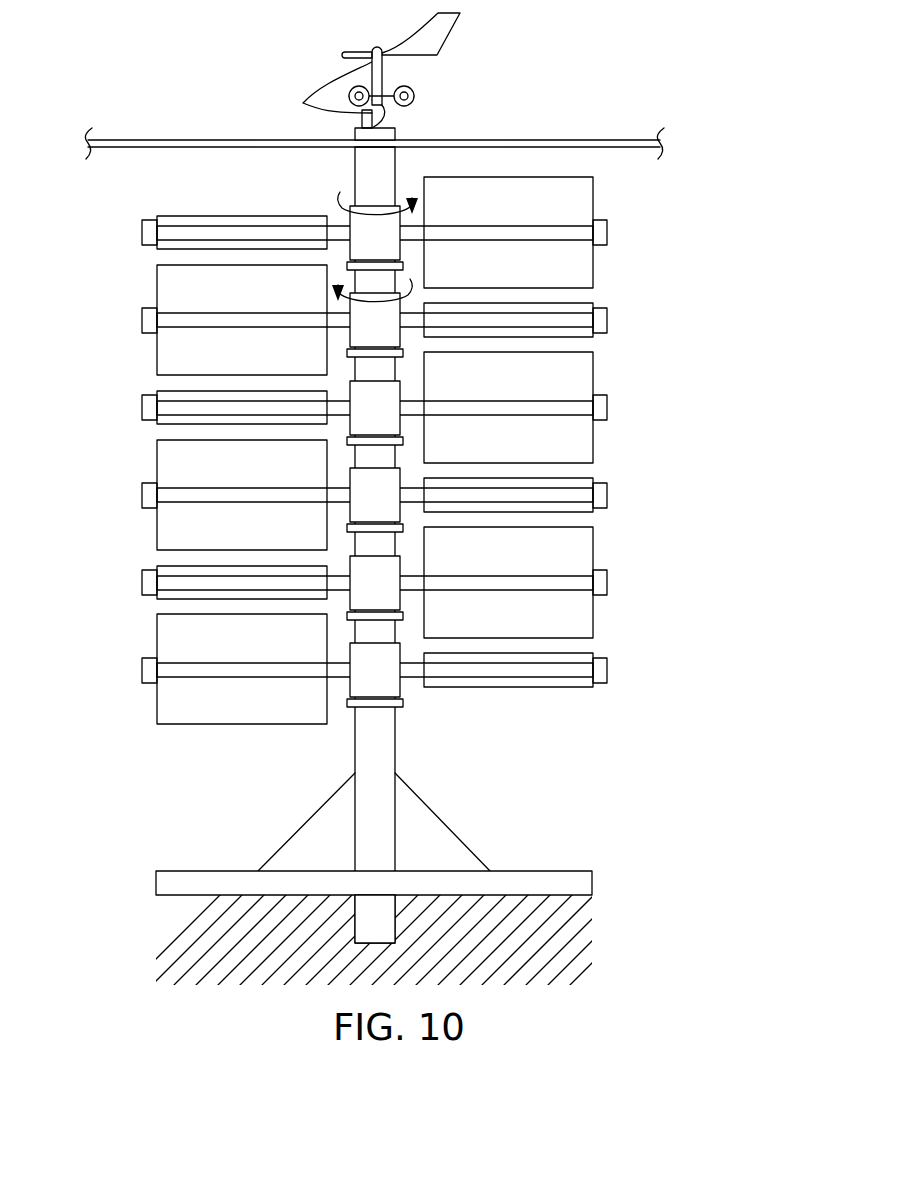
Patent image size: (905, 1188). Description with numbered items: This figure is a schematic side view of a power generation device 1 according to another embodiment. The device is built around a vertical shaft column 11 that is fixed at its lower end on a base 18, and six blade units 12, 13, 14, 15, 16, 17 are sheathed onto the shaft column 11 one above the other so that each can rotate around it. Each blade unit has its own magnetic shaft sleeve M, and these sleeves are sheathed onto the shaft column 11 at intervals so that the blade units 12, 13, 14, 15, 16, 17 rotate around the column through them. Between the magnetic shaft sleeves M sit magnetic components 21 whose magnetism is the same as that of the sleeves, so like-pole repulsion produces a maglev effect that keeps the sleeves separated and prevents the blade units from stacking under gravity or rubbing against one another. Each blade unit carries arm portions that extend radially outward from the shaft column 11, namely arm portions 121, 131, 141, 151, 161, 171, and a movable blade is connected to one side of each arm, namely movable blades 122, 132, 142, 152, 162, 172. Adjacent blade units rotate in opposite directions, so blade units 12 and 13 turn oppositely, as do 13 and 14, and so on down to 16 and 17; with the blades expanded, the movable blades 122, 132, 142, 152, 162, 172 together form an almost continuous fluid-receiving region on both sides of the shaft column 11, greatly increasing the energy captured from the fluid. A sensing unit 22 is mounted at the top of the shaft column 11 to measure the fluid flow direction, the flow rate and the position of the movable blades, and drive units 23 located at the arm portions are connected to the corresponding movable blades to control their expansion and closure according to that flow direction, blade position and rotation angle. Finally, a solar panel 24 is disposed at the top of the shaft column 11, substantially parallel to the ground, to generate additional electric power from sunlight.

The power generation device 1 is at (732, 20).
The shaft column 11 is at (380, 757).
The blade unit 12 is at (396, 185).
The blade unit 13 is at (399, 313).
The blade unit 14 is at (450, 401).
The blade unit 15 is at (399, 488).
The blade unit 16 is at (450, 575).
The blade unit 17 is at (399, 662).
The base 18 is at (445, 884).
The magnetic component 21 is at (404, 266).
The sensing unit 22 is at (305, 103).
The drive unit 23 is at (150, 233).
The solar panel 24 is at (160, 147).
The arm portion 121 is at (300, 232).
The movable blade 122 is at (555, 183).
The arm portion 131 is at (178, 323).
The movable blade 132 is at (172, 290).
The arm portion 141 is at (572, 410).
The movable blade 142 is at (577, 375).
The arm portion 151 is at (178, 498).
The movable blade 152 is at (172, 464).
The arm portion 161 is at (572, 585).
The movable blade 162 is at (577, 550).
The arm portion 171 is at (178, 673).
The movable blade 172 is at (172, 638).
The magnetic shaft sleeve M is at (388, 206).